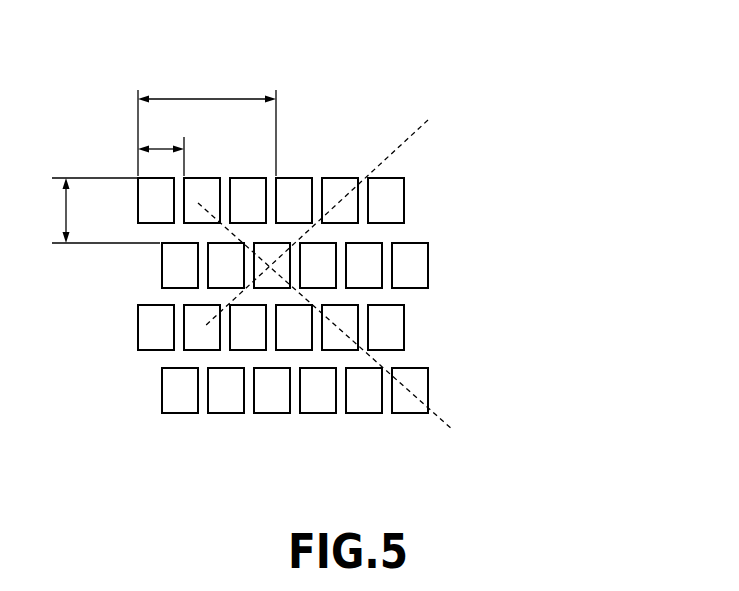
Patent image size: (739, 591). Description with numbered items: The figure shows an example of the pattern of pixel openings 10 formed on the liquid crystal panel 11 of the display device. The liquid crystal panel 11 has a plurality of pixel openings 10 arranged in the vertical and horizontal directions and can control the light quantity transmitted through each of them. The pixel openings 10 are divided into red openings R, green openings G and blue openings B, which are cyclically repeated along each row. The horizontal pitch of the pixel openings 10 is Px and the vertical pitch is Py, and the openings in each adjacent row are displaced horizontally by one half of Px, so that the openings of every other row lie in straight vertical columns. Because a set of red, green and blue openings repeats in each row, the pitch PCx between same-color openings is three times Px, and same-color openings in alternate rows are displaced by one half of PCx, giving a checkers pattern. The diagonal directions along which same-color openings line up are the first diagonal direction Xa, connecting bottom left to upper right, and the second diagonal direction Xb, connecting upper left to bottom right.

The pixel openings 10 is at (295, 177).
The liquid crystal panel 11 is at (312, 215).
The pitch of pixel openings of identical colors in the horizontal direction PCx is at (207, 126).
The horizontal pitch of the pixel openings Px is at (161, 149).
The vertical pitch of the pixel openings Py is at (96, 210).
The first diagonal direction Xa is at (417, 207).
The second diagonal direction Xb is at (442, 345).